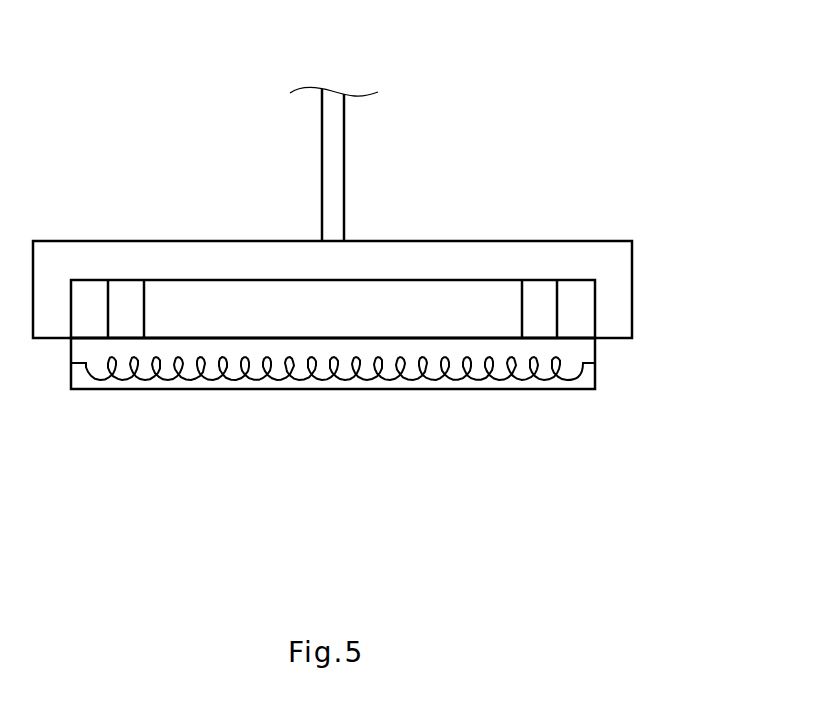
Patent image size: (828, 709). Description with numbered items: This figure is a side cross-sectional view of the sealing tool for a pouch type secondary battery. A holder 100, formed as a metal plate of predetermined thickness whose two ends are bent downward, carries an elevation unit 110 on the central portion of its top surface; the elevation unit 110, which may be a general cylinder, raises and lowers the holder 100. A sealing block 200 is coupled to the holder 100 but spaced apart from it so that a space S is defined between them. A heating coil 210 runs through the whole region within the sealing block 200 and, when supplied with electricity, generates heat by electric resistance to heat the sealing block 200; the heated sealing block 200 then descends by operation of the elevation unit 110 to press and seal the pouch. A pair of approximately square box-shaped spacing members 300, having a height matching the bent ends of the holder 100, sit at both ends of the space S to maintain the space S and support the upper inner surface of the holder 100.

The holder 100 is at (511, 250).
The elevation unit 110 is at (335, 147).
The sealing block 200 is at (593, 377).
The heating coil 210 is at (500, 378).
The spacing member 300 is at (545, 308).
The space S is at (208, 306).